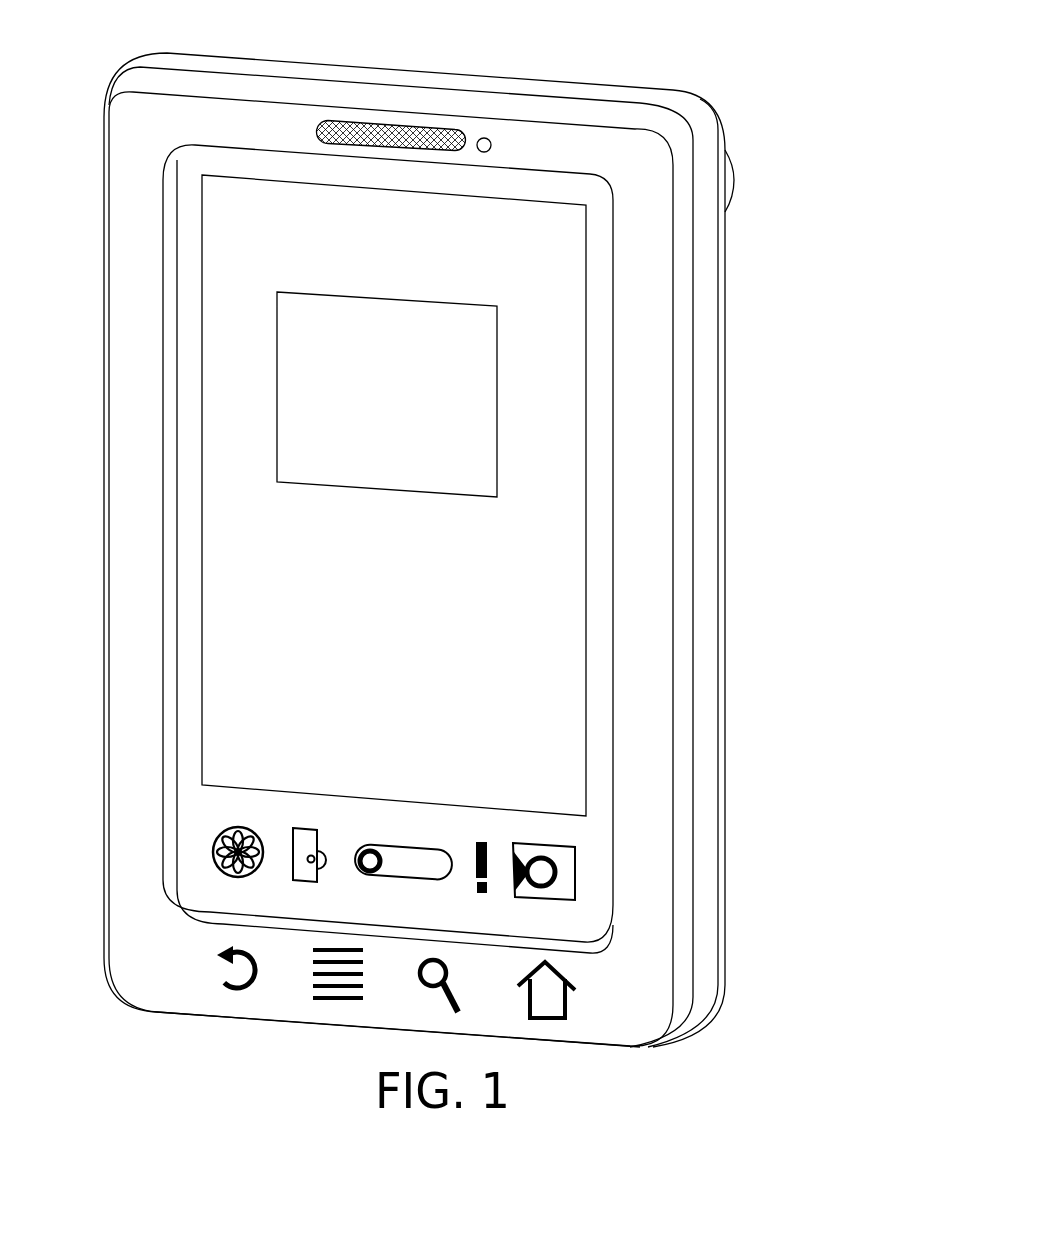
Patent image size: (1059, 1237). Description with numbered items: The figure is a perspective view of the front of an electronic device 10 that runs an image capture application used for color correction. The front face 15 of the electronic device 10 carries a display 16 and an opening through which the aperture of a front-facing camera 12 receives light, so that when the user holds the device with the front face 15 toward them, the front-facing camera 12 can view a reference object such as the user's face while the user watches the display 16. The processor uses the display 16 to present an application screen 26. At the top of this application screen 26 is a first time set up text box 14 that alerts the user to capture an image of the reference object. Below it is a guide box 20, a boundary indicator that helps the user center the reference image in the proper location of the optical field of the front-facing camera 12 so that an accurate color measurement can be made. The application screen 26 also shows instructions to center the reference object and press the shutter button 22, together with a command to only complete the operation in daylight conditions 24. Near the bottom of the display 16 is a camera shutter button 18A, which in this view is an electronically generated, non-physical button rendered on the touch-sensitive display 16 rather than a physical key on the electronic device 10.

The electronic device 10 is at (700, 60).
The front-facing camera 12 is at (484, 132).
The first time set up text box 14 is at (523, 262).
The front face 15 is at (609, 157).
The display 16 is at (277, 176).
The camera shutter button 18A is at (214, 868).
The guide box 20 is at (505, 407).
The instructions to center the reference object and to press the shutter button 22 is at (534, 618).
The command to only complete the operation in daylight conditions 24 is at (542, 781).
The application screen 26 is at (599, 848).